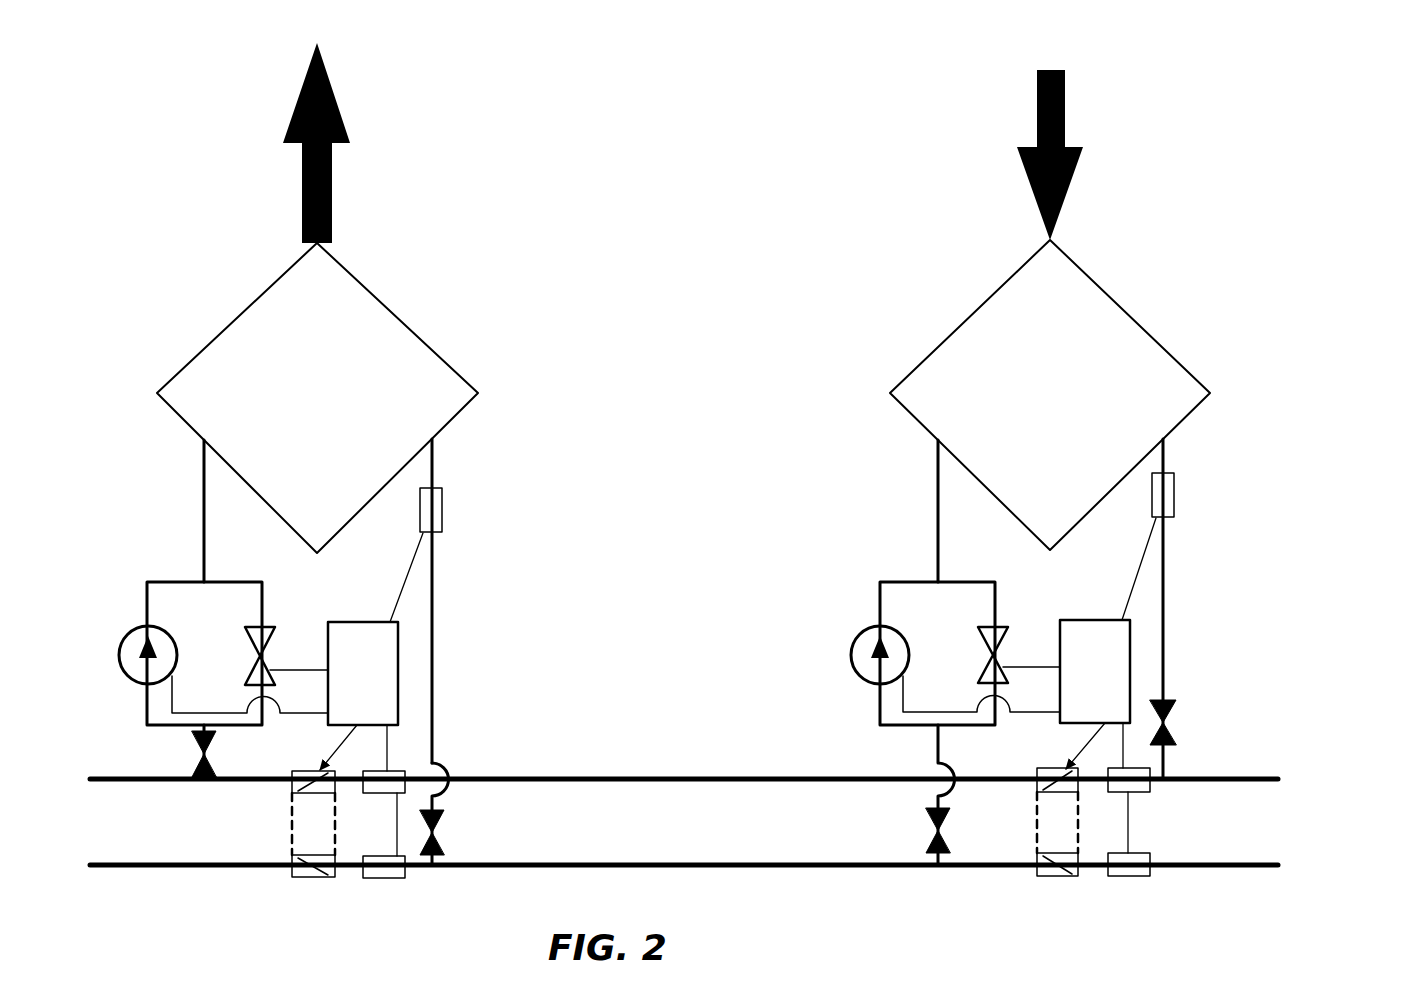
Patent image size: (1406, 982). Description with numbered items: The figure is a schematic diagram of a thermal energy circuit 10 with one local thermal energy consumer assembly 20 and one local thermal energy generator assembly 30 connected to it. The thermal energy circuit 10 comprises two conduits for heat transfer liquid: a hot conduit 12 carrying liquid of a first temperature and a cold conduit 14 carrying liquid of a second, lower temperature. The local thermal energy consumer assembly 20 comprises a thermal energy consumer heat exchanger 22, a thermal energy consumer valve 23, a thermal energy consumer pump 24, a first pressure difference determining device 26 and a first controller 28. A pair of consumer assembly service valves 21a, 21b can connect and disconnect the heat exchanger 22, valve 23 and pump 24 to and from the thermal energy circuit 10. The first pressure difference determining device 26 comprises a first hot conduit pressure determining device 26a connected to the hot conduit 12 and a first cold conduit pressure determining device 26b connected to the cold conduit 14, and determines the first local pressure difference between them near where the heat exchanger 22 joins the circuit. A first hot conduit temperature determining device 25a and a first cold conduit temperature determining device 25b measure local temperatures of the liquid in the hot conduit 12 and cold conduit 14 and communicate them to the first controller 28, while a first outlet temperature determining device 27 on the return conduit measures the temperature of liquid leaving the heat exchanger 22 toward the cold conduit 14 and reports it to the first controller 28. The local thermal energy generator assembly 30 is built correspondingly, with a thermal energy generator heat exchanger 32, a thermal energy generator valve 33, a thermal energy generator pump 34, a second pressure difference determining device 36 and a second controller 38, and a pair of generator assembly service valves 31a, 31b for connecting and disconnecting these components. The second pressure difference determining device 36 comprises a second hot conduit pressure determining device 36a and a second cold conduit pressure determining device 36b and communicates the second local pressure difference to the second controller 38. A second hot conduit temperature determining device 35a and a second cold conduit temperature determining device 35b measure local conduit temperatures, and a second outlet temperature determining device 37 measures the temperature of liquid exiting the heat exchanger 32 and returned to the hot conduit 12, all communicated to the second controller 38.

The thermal energy circuit 10 is at (1305, 810).
The hot conduit 12 is at (692, 777).
The cold conduit 14 is at (786, 868).
The local thermal energy consumer assembly 20 is at (147, 343).
The consumer assembly service valve 21a is at (190, 762).
The consumer assembly service valve 21b is at (436, 800).
The thermal energy consumer heat exchanger 22 is at (248, 335).
The thermal energy consumer valve 23 is at (272, 629).
The thermal energy consumer pump 24 is at (135, 650).
The first hot conduit temperature determining device 25a is at (385, 793).
The first cold conduit temperature determining device 25b is at (377, 880).
The first pressure difference determining device 26 is at (288, 815).
The first hot conduit pressure determining device 26a is at (297, 772).
The first cold conduit pressure determining device 26b is at (293, 877).
The first outlet temperature determining device 27 is at (443, 506).
The first controller 28 is at (374, 622).
The local thermal energy generator assembly 30 is at (880, 343).
The generator assembly service valve 31a is at (928, 816).
The generator assembly service valve 31b is at (1175, 700).
The thermal energy generator heat exchanger 32 is at (983, 343).
The thermal energy generator valve 33 is at (1005, 630).
The thermal energy generator pump 34 is at (866, 648).
The second hot conduit temperature determining device 35a is at (1150, 788).
The second cold conduit temperature determining device 35b is at (1138, 877).
The second pressure difference determining device 36 is at (1037, 816).
The second hot conduit pressure determining device 36a is at (1042, 770).
The second cold conduit pressure determining device 36b is at (1040, 876).
The second outlet temperature determining device 37 is at (1170, 489).
The second controller 38 is at (1103, 620).